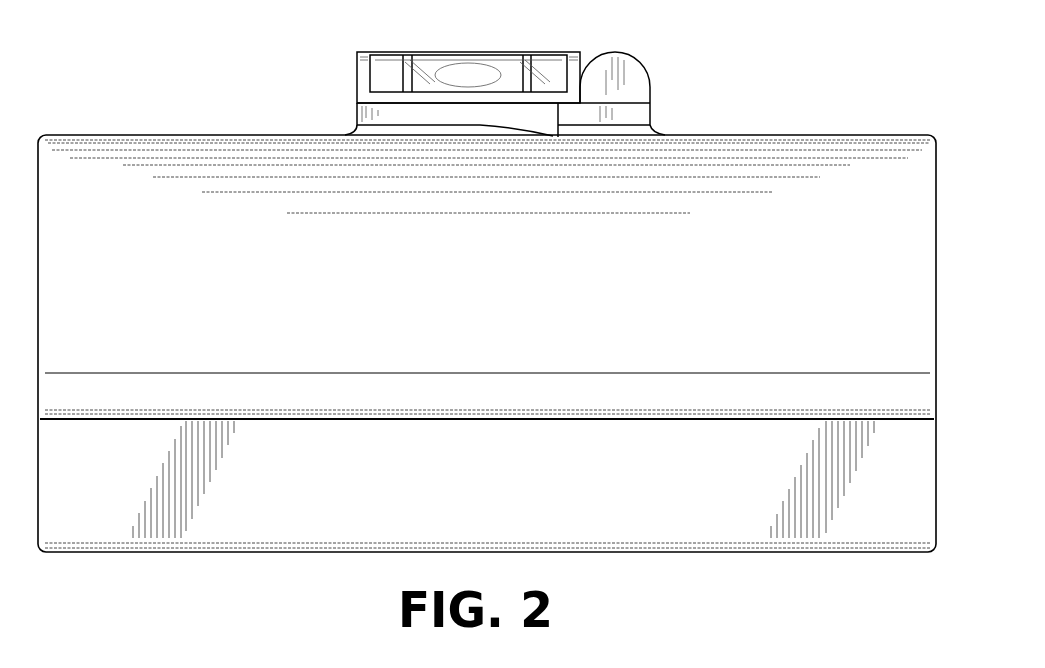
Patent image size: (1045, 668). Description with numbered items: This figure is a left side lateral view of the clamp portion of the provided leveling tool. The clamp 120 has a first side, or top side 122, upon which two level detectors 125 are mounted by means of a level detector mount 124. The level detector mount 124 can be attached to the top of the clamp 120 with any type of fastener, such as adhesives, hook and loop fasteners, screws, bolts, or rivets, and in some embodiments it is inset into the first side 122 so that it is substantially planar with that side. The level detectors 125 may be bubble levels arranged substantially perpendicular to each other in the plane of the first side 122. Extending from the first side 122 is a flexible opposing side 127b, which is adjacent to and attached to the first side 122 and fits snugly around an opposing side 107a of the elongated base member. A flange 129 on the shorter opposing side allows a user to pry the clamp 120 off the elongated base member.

The clamp 120 is at (232, 97).
The first side 122 is at (750, 131).
The level detector mount 124 is at (357, 118).
The level detector 125 is at (475, 53).
The flexible opposing second side 127b is at (860, 205).
The flange 129 is at (513, 389).
The opposing side of elongated member 107a is at (708, 497).